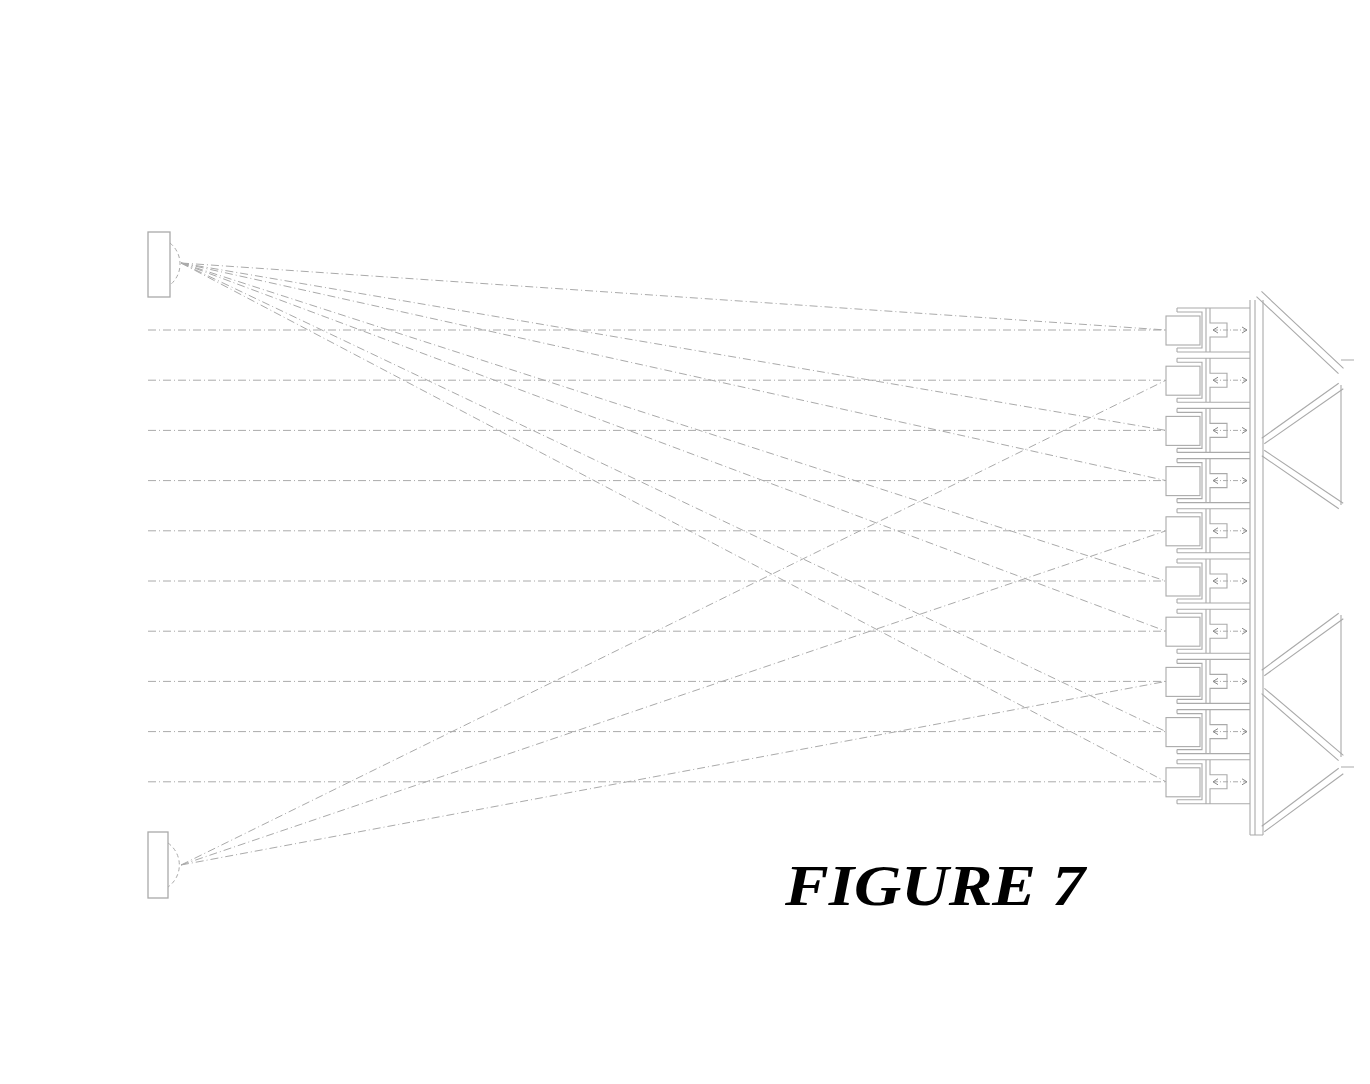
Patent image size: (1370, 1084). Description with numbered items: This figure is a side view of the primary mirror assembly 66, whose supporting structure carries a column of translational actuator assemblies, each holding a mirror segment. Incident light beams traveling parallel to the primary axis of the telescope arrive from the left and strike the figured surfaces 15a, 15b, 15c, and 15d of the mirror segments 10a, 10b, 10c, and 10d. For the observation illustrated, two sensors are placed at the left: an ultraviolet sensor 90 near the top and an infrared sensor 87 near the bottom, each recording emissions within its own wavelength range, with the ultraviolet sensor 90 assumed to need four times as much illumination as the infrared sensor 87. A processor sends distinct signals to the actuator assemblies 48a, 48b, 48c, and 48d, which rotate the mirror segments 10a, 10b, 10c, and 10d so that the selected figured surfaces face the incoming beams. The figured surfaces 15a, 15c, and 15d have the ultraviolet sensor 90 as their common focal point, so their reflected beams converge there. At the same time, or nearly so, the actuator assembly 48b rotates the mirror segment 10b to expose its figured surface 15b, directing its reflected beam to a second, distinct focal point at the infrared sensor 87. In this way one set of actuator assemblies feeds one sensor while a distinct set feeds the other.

The primary mirror assembly 66 is at (531, 128).
The ultraviolet sensor 90 is at (170, 288).
The infrared sensor 87 is at (168, 890).
The mirror segment 10a is at (1158, 342).
The mirror segment 10b is at (1162, 383).
The mirror segment 10c is at (1172, 433).
The mirror segment 10d is at (1159, 496).
The figured surface 15a is at (1197, 340).
The figured surface 15b is at (1197, 390).
The figured surface 15c is at (1197, 440).
The figured surface 15d is at (1197, 490).
The actuator assembly 48a is at (1235, 324).
The actuator assembly 48b is at (1235, 379).
The actuator assembly 48c is at (1240, 428).
The actuator assembly 48d is at (1240, 485).